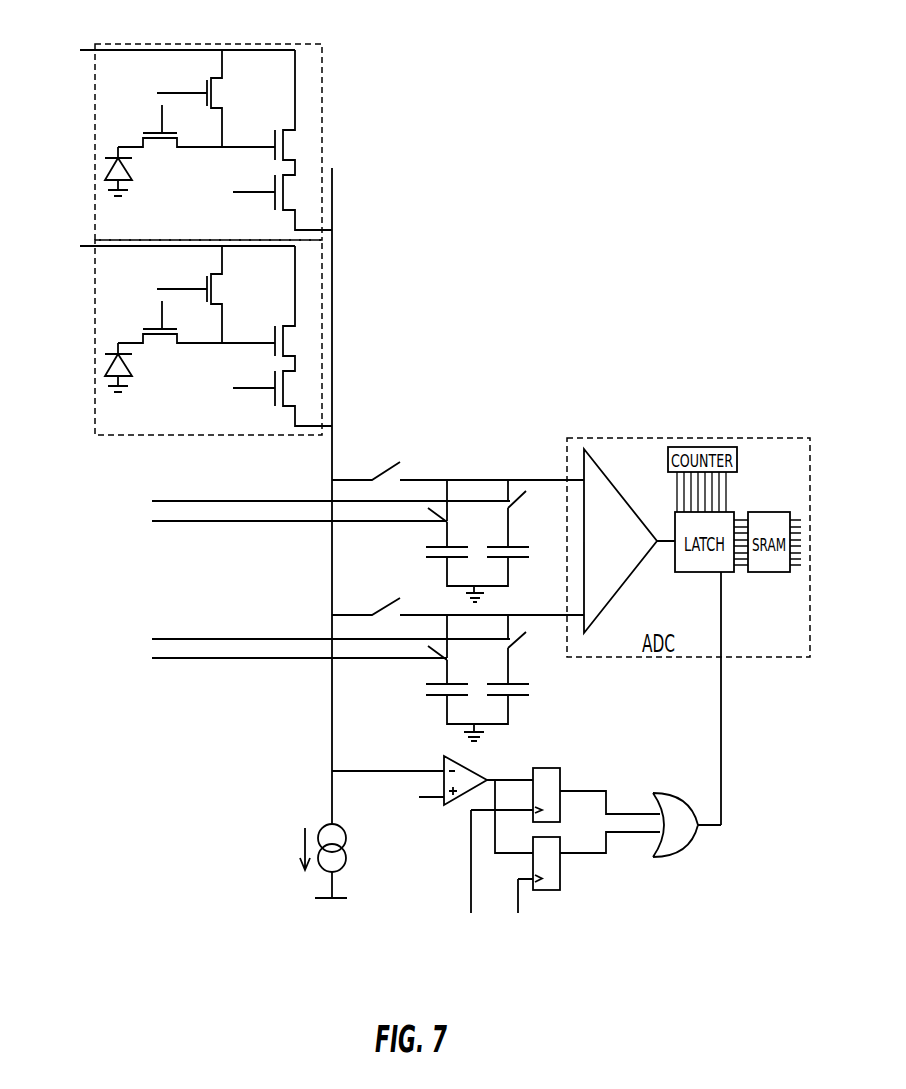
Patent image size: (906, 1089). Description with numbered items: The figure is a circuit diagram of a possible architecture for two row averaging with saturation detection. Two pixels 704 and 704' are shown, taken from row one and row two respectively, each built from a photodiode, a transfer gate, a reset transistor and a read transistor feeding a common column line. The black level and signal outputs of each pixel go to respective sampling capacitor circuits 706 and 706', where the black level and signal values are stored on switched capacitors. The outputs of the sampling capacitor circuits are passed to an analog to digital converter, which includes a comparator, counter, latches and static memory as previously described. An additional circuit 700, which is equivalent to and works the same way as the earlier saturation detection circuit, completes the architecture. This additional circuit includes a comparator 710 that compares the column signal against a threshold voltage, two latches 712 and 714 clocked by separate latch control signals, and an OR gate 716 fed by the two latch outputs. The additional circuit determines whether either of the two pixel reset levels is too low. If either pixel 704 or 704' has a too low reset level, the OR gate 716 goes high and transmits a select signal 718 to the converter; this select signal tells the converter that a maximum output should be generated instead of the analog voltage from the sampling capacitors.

The additional circuit 700 is at (427, 885).
The pixel 704 is at (198, 134).
The pixel 704' is at (182, 330).
The sampling capacitor circuit 706 is at (348, 511).
The sampling capacitor circuit 706' is at (359, 657).
The comparator 710 is at (478, 748).
The latch 712 is at (560, 772).
The latch 714 is at (560, 885).
The OR gate 716 is at (683, 802).
The select signal 718 is at (721, 670).